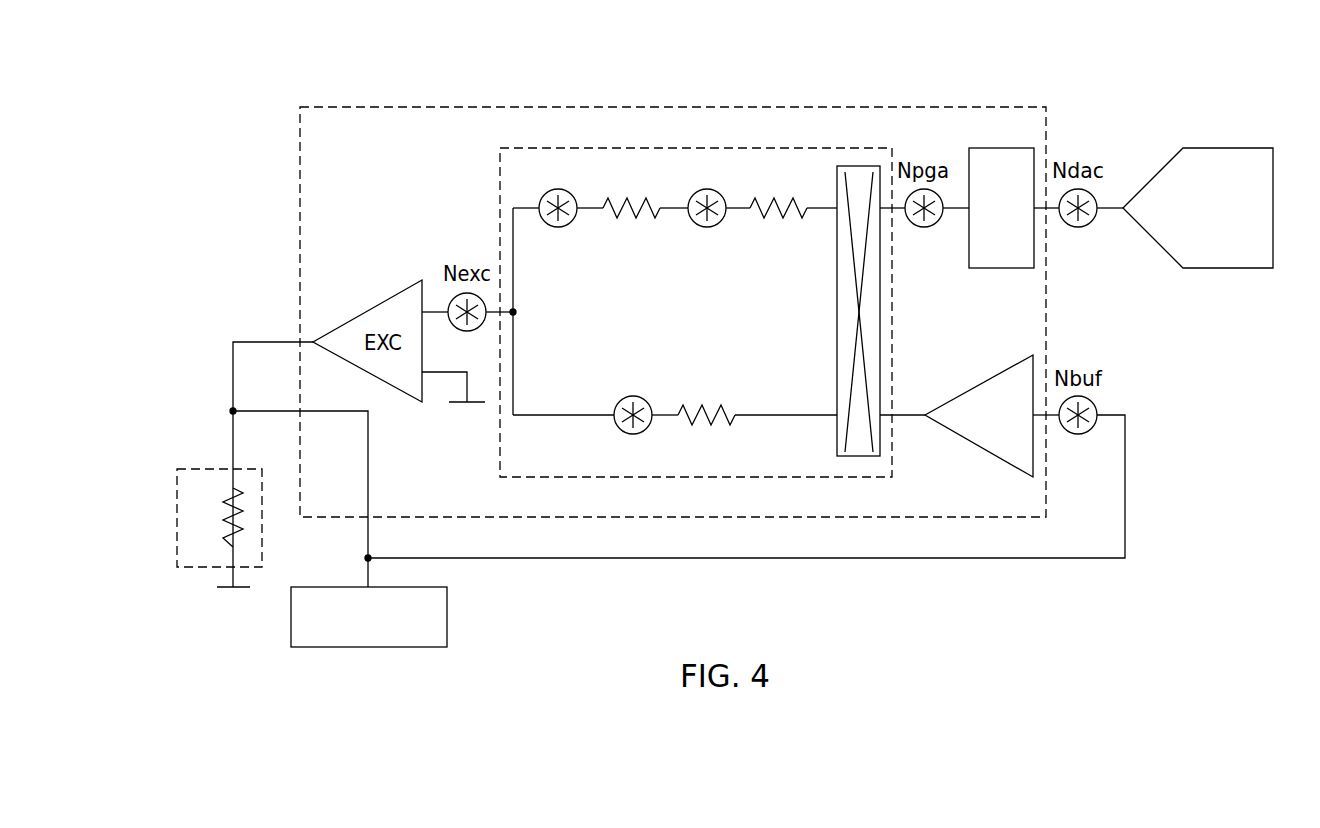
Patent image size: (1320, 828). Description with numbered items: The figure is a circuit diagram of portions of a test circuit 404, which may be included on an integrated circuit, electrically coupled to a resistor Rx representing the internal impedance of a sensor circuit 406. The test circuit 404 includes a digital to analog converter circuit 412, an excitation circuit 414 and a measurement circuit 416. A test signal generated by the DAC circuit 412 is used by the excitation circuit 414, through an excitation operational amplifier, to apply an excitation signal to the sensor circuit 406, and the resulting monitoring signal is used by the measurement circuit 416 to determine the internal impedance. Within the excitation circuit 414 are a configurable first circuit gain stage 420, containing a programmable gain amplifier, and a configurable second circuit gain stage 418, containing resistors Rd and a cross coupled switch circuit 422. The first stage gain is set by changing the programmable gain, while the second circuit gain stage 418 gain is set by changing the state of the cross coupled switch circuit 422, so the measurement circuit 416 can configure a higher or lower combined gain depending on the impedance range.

The test circuit 404 is at (252, 80).
The sensor circuit 406 is at (177, 520).
The digital to analog converter (DAC) circuit 412 is at (1228, 148).
The excitation circuit 414 is at (673, 107).
The measurement circuit 416 is at (447, 613).
The second circuit gain stage 418 is at (697, 148).
The first circuit gain stage 420 is at (1000, 148).
The cross coupled switch circuit 422 is at (880, 311).